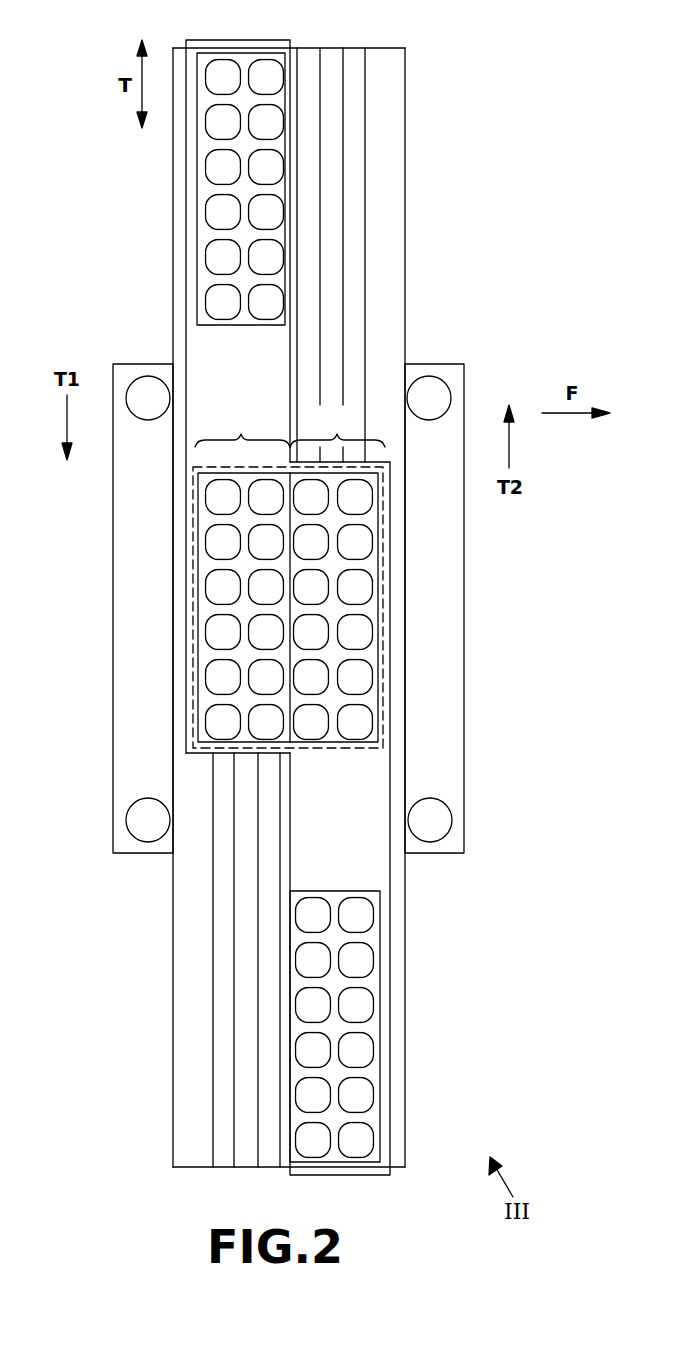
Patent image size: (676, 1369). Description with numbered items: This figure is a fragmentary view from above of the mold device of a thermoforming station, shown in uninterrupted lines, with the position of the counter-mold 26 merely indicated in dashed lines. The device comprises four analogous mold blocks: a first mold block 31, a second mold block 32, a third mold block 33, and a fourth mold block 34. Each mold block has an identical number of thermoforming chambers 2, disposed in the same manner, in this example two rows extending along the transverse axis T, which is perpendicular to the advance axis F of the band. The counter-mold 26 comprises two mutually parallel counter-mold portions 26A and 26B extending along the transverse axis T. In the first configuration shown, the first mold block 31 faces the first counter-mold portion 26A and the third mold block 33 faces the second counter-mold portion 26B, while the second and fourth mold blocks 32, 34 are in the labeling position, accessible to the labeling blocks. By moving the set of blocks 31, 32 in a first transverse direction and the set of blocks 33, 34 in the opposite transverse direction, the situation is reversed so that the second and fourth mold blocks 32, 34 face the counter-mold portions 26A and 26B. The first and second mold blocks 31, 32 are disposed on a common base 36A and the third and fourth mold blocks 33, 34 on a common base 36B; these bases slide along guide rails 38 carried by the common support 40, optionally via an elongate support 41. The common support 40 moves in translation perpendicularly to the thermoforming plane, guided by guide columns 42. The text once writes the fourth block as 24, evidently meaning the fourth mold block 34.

The thermoforming chambers 2 is at (218, 212).
The test device / apparatus 24 is at (480, 341).
The counter-mold 26 is at (180, 608).
The first counter-mold portion 26A is at (193, 530).
The second counter-mold portion 26B is at (385, 652).
The first mold block 31 is at (208, 695).
The second mold block 32 is at (244, 60).
The third mold block 33 is at (373, 517).
The fourth mold block 34 is at (372, 1112).
The common base 36A is at (210, 357).
The common base 36B is at (358, 858).
The guide rails 38 is at (362, 55).
The common support 40 is at (448, 733).
The elongate support 41 is at (185, 1007).
The guide columns 42 is at (147, 408).